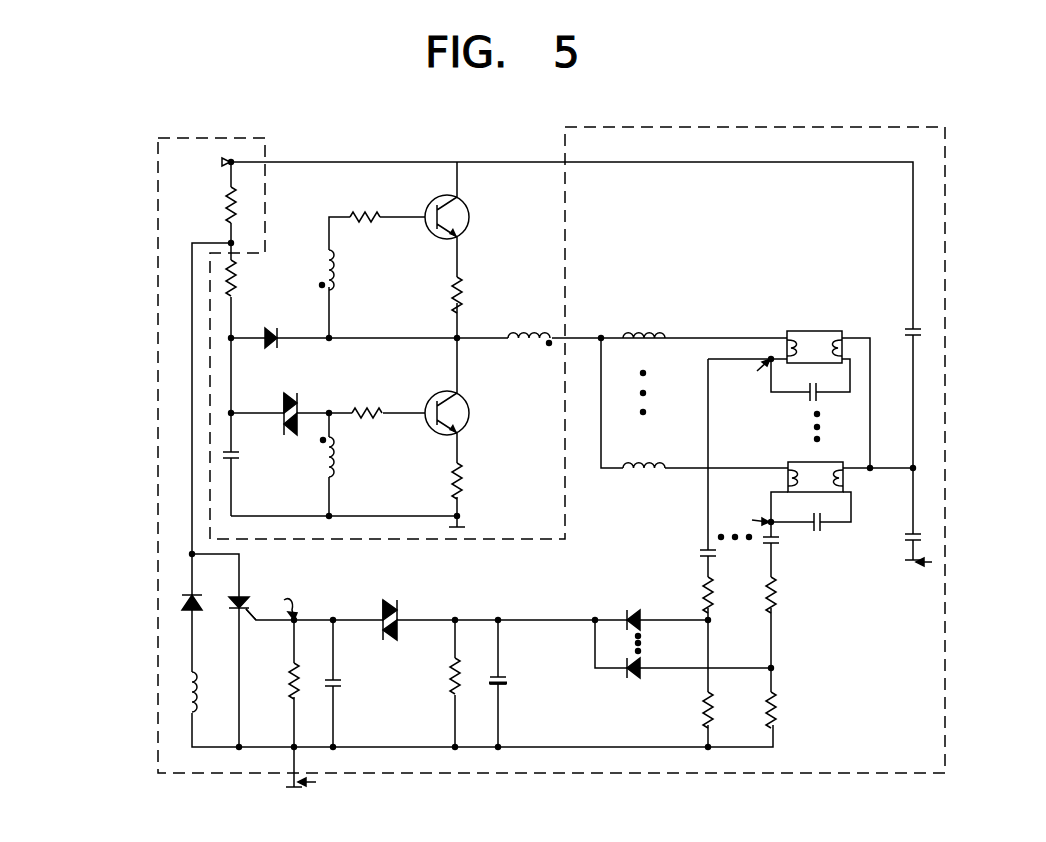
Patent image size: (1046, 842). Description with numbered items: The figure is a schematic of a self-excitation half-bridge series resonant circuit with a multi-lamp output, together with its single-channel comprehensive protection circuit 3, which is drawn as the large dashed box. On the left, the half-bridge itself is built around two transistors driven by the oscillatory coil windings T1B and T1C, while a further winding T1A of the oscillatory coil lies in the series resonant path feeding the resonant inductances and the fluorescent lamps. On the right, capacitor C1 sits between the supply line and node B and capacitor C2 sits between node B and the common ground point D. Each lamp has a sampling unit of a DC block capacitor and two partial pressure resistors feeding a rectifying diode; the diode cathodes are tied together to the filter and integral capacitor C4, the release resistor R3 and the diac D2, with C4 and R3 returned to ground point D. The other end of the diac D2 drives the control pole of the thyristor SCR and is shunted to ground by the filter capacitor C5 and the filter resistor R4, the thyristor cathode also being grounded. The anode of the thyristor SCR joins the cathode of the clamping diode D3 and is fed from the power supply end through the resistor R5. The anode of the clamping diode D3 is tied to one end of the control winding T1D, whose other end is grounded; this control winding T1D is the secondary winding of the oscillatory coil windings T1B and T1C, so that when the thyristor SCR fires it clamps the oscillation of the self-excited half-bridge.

The single-channel comprehensive protection circuit 3 is at (145, 571).
The capacitor C1 is at (921, 333).
The capacitor C2 is at (920, 538).
The filter and integral capacitor C4 is at (506, 670).
The filter capacitor C5 is at (342, 682).
The release resistor R3 is at (446, 676).
The filter resistor R4 is at (286, 681).
The resistor R5 is at (243, 205).
The diac D2 is at (401, 617).
The clamping diode D3 is at (199, 594).
The thyristor SCR is at (248, 598).
The winding of the oscillatory coil T1A is at (530, 330).
The oscillatory coil winding T1B is at (341, 270).
The oscillatory coil winding T1C is at (341, 457).
The control winding T1D is at (208, 692).